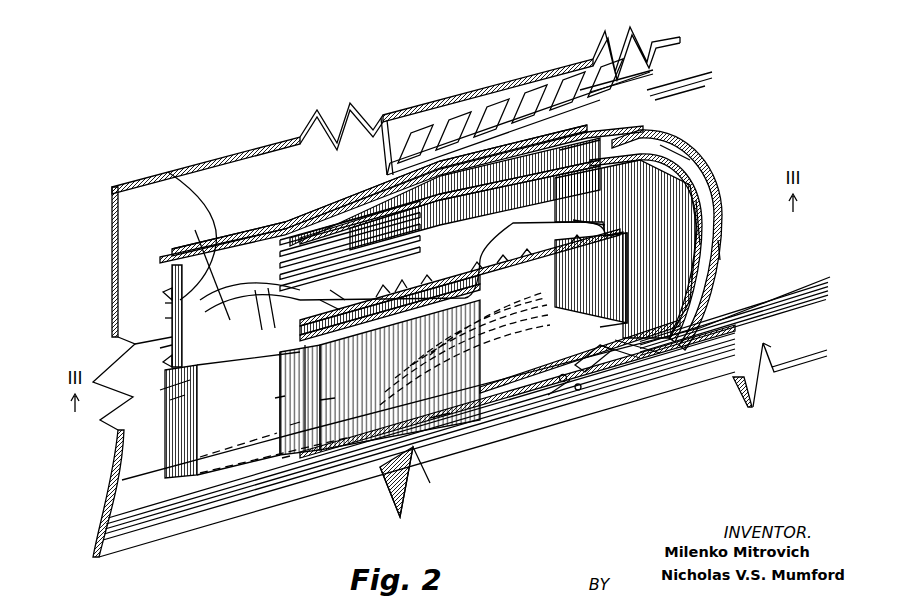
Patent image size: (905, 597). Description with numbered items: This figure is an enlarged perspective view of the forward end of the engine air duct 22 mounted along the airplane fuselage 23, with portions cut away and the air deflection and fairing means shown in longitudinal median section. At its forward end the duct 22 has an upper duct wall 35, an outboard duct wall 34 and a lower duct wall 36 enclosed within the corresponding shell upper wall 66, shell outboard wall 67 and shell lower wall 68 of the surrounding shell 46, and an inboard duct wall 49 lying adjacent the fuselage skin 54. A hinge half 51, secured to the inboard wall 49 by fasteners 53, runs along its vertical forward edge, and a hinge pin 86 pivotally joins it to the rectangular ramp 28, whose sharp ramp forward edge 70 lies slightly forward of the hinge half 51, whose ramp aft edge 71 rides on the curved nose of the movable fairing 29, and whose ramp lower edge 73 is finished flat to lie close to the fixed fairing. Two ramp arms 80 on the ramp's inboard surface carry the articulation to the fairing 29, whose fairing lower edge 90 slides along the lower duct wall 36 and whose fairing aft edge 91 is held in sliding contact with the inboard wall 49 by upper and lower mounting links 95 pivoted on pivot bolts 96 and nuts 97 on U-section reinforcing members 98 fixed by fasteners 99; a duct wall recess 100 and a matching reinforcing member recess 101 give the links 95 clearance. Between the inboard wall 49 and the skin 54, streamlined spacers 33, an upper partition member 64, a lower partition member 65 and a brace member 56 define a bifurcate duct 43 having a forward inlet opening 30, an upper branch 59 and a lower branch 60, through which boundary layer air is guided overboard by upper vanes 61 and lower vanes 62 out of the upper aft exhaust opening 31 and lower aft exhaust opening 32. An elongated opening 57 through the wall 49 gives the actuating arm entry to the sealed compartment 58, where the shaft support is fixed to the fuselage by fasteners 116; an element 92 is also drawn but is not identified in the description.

The engine air duct 22 is at (686, 166).
The fuselage 23 is at (186, 544).
The ramp 28 is at (221, 416).
The movable fairing 29 is at (537, 301).
The forward inlet opening 30 is at (167, 343).
The upper aft exhaust opening 31 is at (435, 137).
The lower aft exhaust opening 32 is at (632, 353).
The streamlined spacers 33 is at (170, 305).
The outboard duct wall 34 is at (704, 216).
The upper duct wall 35 is at (283, 197).
The lower duct wall 36 is at (452, 402).
The bifurcate duct 43 is at (200, 233).
The shell 46 is at (714, 178).
The inboard duct wall 49 is at (702, 201).
The hinge half 51 is at (140, 342).
The fasteners 53 is at (201, 226).
The fuselage skin 54 is at (497, 78).
The brace member 56 is at (392, 312).
The elongated opening 57 is at (340, 295).
The compartment 58 is at (333, 307).
The upper branch 59 is at (241, 296).
The lower branch 60 is at (185, 381).
The upper vanes 61 is at (272, 270).
The lower vanes 62 is at (275, 400).
The upper partition member 64 is at (170, 293).
The lower partition member 65 is at (168, 420).
The shell upper wall 66 is at (387, 118).
The shell outboard wall 67 is at (719, 248).
The shell lower wall 68 is at (433, 424).
The ramp forward edge 70 is at (124, 481).
The ramp aft edge 71 is at (328, 400).
The ramp lower edge 73 is at (287, 420).
The ramp arms 80 is at (305, 346).
The hinge pin 86 is at (172, 318).
The fairing lower edge 90 is at (418, 430).
The fairing aft edge 91 is at (627, 283).
The member 92 is at (292, 440).
The mounting links 95 is at (582, 368).
The pivot bolts 96 is at (578, 378).
The nuts 97 is at (623, 134).
The reinforcing members 98 is at (641, 152).
The fasteners 99 is at (615, 115).
The duct wall recess 100 is at (565, 372).
The reinforcing member recess 101 is at (574, 378).
The fasteners 116 is at (283, 307).